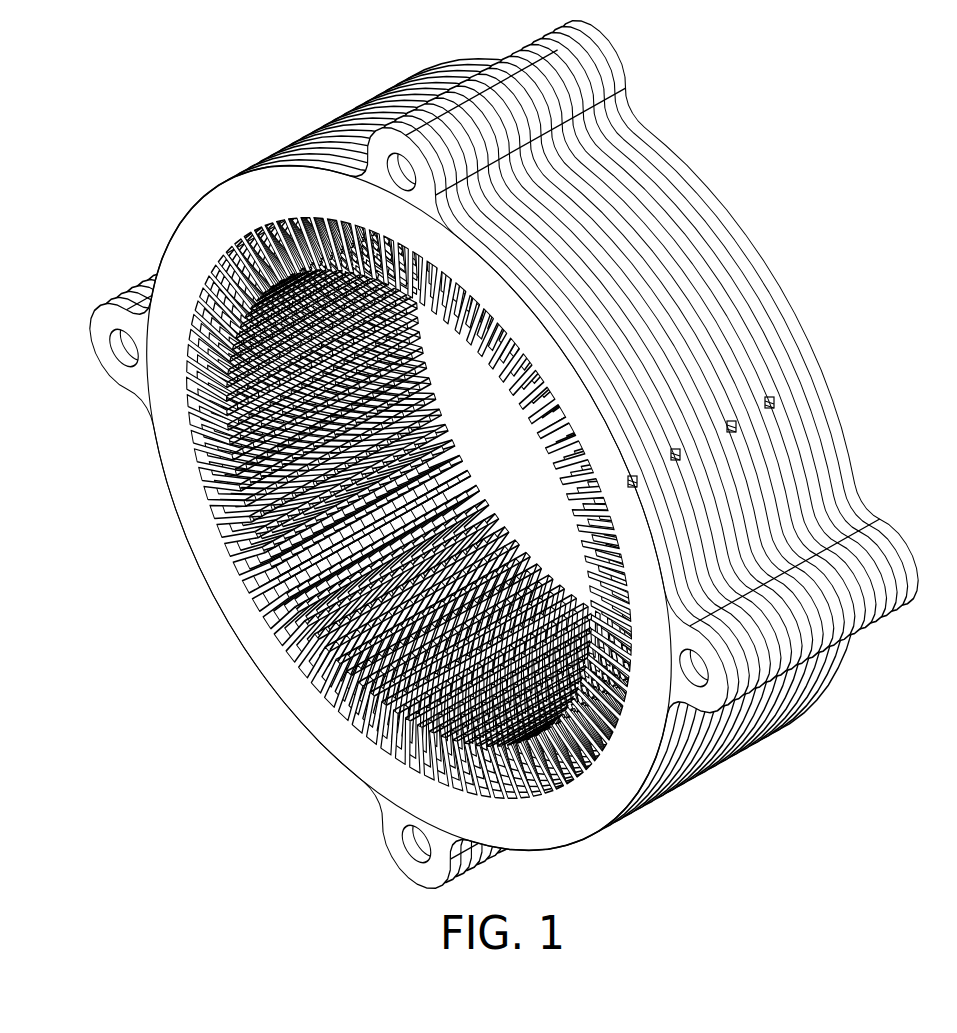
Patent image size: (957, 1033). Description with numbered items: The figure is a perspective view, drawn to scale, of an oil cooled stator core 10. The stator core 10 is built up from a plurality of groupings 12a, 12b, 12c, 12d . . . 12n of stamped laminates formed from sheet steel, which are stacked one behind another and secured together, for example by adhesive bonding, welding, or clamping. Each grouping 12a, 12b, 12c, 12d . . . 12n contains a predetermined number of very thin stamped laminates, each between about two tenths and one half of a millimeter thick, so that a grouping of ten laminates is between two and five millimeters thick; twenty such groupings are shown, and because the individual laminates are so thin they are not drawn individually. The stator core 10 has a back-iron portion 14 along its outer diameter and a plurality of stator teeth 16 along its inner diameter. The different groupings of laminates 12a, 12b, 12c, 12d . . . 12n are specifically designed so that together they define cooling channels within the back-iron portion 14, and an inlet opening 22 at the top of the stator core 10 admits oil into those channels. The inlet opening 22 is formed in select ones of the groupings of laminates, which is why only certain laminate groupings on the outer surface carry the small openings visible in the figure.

The stator core 10 is at (503, 516).
The grouping of stamped laminates 12a is at (540, 302).
The grouping of stamped laminates 12b is at (572, 325).
The grouping of stamped laminates 12c is at (607, 357).
The grouping of stamped laminates 12d is at (642, 392).
The grouping of stamped laminates 12n is at (786, 304).
The back-iron portion 14 is at (233, 602).
The stator teeth 16 is at (277, 648).
The inlet opening 22 is at (680, 457).